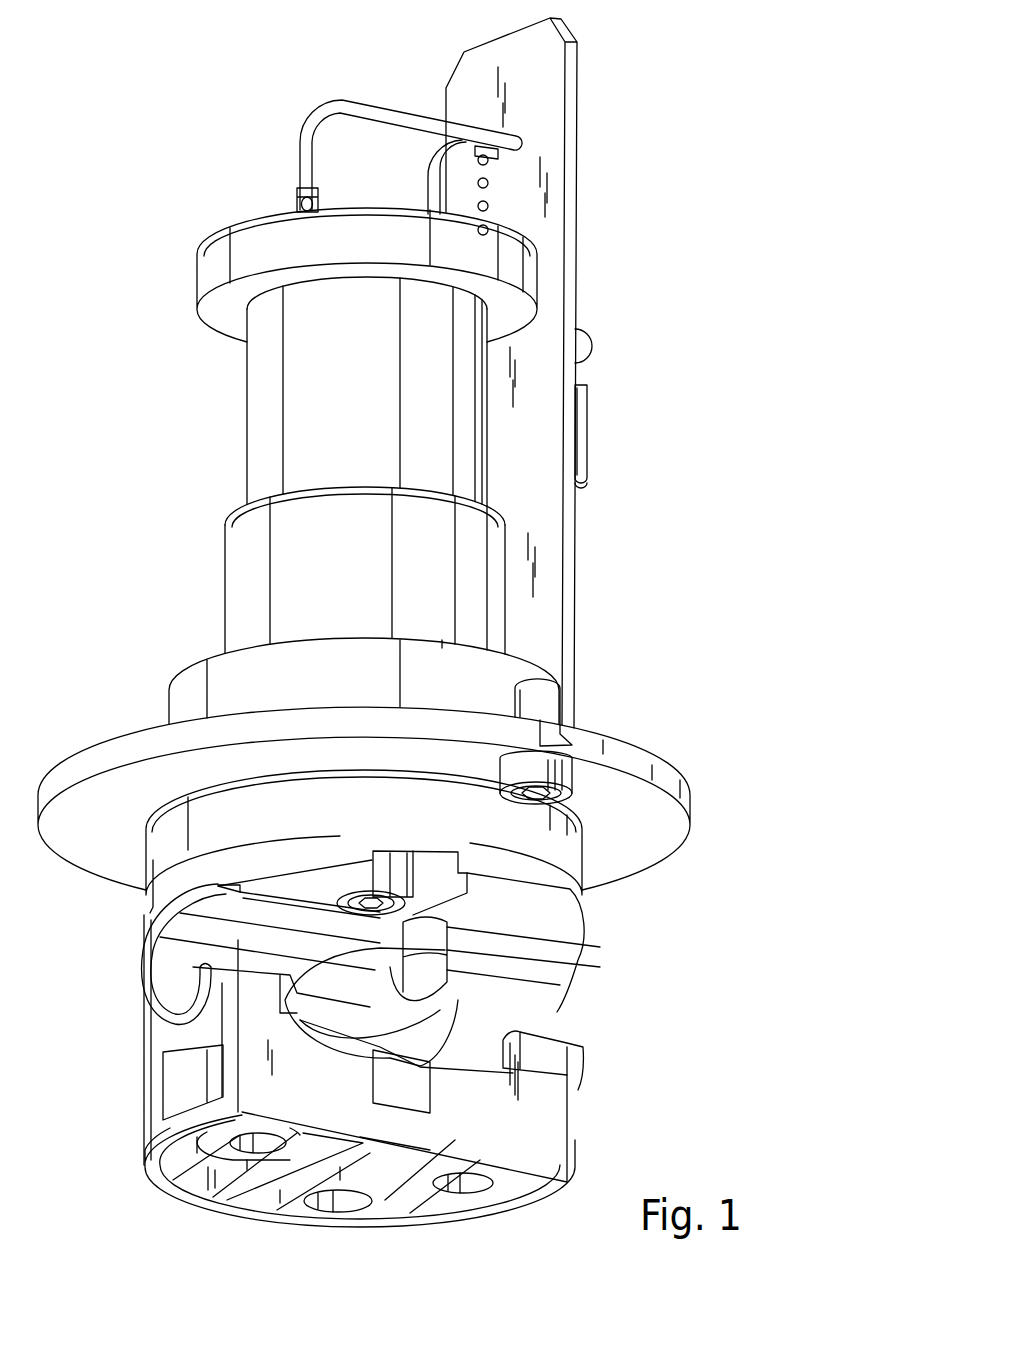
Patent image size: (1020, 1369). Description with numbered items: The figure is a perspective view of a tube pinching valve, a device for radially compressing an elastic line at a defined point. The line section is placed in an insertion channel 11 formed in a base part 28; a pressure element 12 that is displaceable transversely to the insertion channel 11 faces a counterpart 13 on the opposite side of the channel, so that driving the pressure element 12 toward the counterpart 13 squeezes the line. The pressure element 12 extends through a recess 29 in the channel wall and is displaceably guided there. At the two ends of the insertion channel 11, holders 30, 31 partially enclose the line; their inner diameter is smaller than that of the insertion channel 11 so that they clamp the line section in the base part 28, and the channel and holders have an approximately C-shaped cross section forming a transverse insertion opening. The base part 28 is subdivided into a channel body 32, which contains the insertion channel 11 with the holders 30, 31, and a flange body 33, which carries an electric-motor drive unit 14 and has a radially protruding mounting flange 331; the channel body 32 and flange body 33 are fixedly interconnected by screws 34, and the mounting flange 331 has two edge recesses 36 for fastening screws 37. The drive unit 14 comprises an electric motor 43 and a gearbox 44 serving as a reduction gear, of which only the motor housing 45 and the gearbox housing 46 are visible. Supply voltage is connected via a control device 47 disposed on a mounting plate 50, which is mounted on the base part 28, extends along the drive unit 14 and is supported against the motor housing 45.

The mounting plate 50 is at (568, 165).
The control device 47 is at (589, 371).
The electric-motor drive unit 14 is at (193, 505).
The electric motor 43 is at (243, 385).
The motor housing 45 is at (265, 435).
The gearbox 44 is at (230, 560).
The gearbox housing 46 is at (245, 605).
The flange body 33 is at (493, 668).
The base part 28 is at (598, 720).
The mounting flange 331 is at (692, 795).
The recess 36 is at (572, 733).
The fastening screw 37 is at (557, 780).
The pressure element 12 is at (430, 933).
The screw 34 is at (400, 873).
The recess 29 is at (263, 935).
The holder 31 is at (187, 1008).
The insertion channel 11 is at (440, 1045).
The holder 30 is at (553, 1033).
The channel body 32 is at (543, 1143).
The counterpart 13 is at (413, 1093).